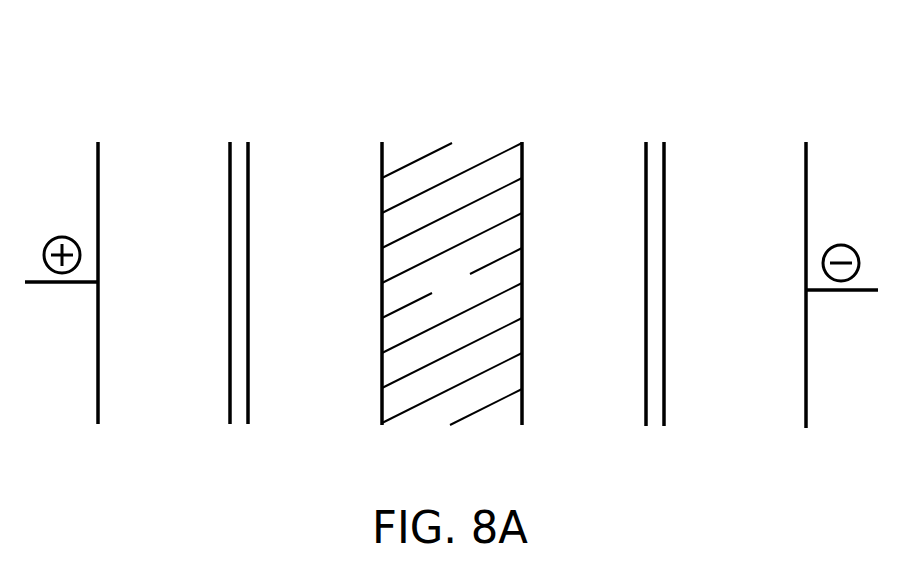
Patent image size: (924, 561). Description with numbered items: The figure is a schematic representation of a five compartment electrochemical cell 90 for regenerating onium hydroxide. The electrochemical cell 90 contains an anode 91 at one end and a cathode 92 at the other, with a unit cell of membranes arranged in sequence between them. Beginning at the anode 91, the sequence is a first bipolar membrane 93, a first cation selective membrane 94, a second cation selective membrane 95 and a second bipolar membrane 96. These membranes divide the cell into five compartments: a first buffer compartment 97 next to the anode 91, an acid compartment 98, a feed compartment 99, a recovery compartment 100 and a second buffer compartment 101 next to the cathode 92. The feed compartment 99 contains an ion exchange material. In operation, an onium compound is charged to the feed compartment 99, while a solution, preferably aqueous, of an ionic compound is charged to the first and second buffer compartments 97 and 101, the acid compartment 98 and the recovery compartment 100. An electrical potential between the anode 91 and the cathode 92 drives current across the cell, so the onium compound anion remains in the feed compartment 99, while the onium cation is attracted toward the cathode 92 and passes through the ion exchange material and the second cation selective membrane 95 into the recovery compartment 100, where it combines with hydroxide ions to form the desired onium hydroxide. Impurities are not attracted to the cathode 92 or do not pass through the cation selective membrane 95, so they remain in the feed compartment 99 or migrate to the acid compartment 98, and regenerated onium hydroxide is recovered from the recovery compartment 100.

The electrochemical cell 90 is at (131, 62).
The anode 91 is at (69, 268).
The cathode 92 is at (834, 270).
The first bipolar membrane 93 is at (239, 290).
The first cation selective membrane 94 is at (382, 291).
The second cation selective membrane 95 is at (522, 291).
The second bipolar membrane 96 is at (654, 291).
The first buffer compartment 97 is at (168, 282).
The acid compartment 98 is at (311, 282).
The feed compartment 99 is at (452, 284).
The recovery compartment 100 is at (588, 285).
The second buffer compartment 101 is at (729, 285).